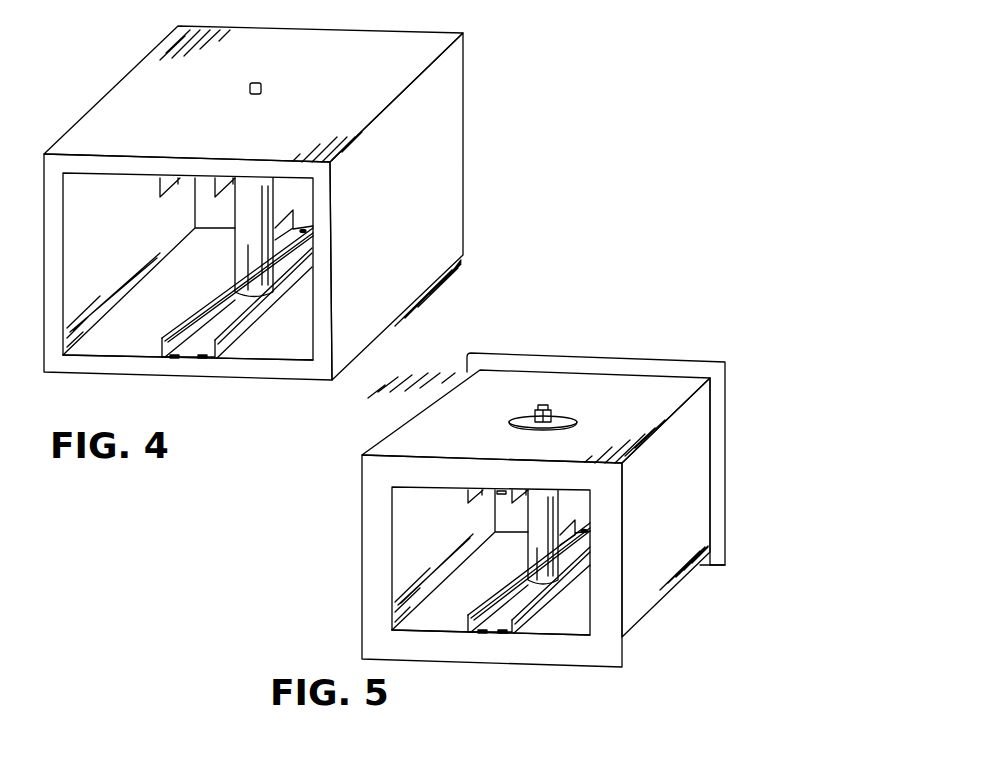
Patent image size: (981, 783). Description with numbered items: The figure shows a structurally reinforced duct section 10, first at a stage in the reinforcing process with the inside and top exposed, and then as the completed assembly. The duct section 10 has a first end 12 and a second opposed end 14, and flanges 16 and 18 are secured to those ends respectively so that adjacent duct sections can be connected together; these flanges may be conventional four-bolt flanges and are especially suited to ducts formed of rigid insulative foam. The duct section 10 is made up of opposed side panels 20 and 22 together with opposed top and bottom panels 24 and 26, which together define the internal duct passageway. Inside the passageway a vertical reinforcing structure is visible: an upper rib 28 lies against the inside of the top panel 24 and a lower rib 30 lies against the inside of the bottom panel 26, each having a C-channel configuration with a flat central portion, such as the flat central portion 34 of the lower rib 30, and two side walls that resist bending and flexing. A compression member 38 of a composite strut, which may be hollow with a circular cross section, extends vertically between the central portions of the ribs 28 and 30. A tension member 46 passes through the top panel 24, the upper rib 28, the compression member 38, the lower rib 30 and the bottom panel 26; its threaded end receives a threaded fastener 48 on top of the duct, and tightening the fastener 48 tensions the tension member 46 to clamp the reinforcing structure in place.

In FIG. 5, the structurally reinforced duct section 10 is at (667, 632).
In FIG. 5, the first end 12 is at (476, 672).
In FIG. 5, the second opposed end 14 is at (765, 362).
In FIG. 4, the flange 16 is at (133, 164).
In FIG. 5, the flange 16 is at (572, 668).
In FIG. 5, the flange 18 is at (725, 478).
In FIG. 4, the side panel 20 is at (78, 233).
In FIG. 5, the side panel 20 is at (665, 575).
In FIG. 4, the side panel 22 is at (44, 241).
In FIG. 5, the side panel 22 is at (408, 527).
In FIG. 4, the top panel 24 is at (316, 118).
In FIG. 5, the top panel 24 is at (678, 386).
In FIG. 4, the bottom panel 26 is at (128, 345).
In FIG. 5, the bottom panel 26 is at (445, 622).
In FIG. 4, the upper rib 28 is at (224, 186).
In FIG. 5, the upper rib 28 is at (520, 490).
In FIG. 4, the lower rib 30 is at (186, 326).
In FIG. 5, the lower rib 30 is at (517, 636).
In FIG. 4, the flat central portion 34 is at (230, 312).
In FIG. 5, the flat central portion 34 is at (497, 613).
In FIG. 4, the compression member 38 is at (238, 212).
In FIG. 5, the compression member 38 is at (555, 506).
In FIG. 4, the tension member 46 is at (256, 80).
In FIG. 5, the tension member 46 is at (543, 405).
In FIG. 5, the threaded fastener 48 is at (565, 420).